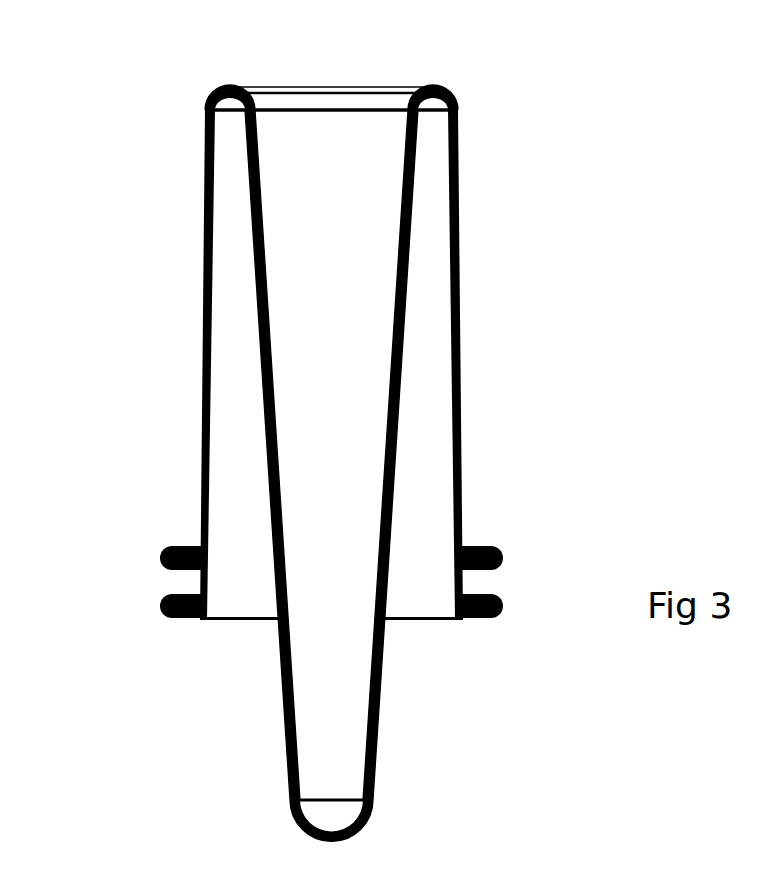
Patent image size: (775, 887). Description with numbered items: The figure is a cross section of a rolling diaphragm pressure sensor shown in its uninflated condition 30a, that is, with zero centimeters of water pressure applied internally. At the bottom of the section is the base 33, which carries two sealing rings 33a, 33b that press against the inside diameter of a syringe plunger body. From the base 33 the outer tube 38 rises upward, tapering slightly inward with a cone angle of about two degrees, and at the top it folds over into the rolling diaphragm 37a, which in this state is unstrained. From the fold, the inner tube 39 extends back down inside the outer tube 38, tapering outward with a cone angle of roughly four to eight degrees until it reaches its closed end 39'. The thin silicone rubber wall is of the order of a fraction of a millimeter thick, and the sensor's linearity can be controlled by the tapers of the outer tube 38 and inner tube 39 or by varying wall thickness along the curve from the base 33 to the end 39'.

The uninflated condition of rolling diaphragm pressure sensor 30a is at (176, 149).
The rolling diaphragm 37a is at (420, 88).
The outer tube 38 is at (205, 303).
The base 33 is at (171, 519).
The sealing ring 33a is at (162, 605).
The sealing ring 33b is at (162, 551).
The inner tube 39 is at (333, 475).
The end 39' is at (371, 815).